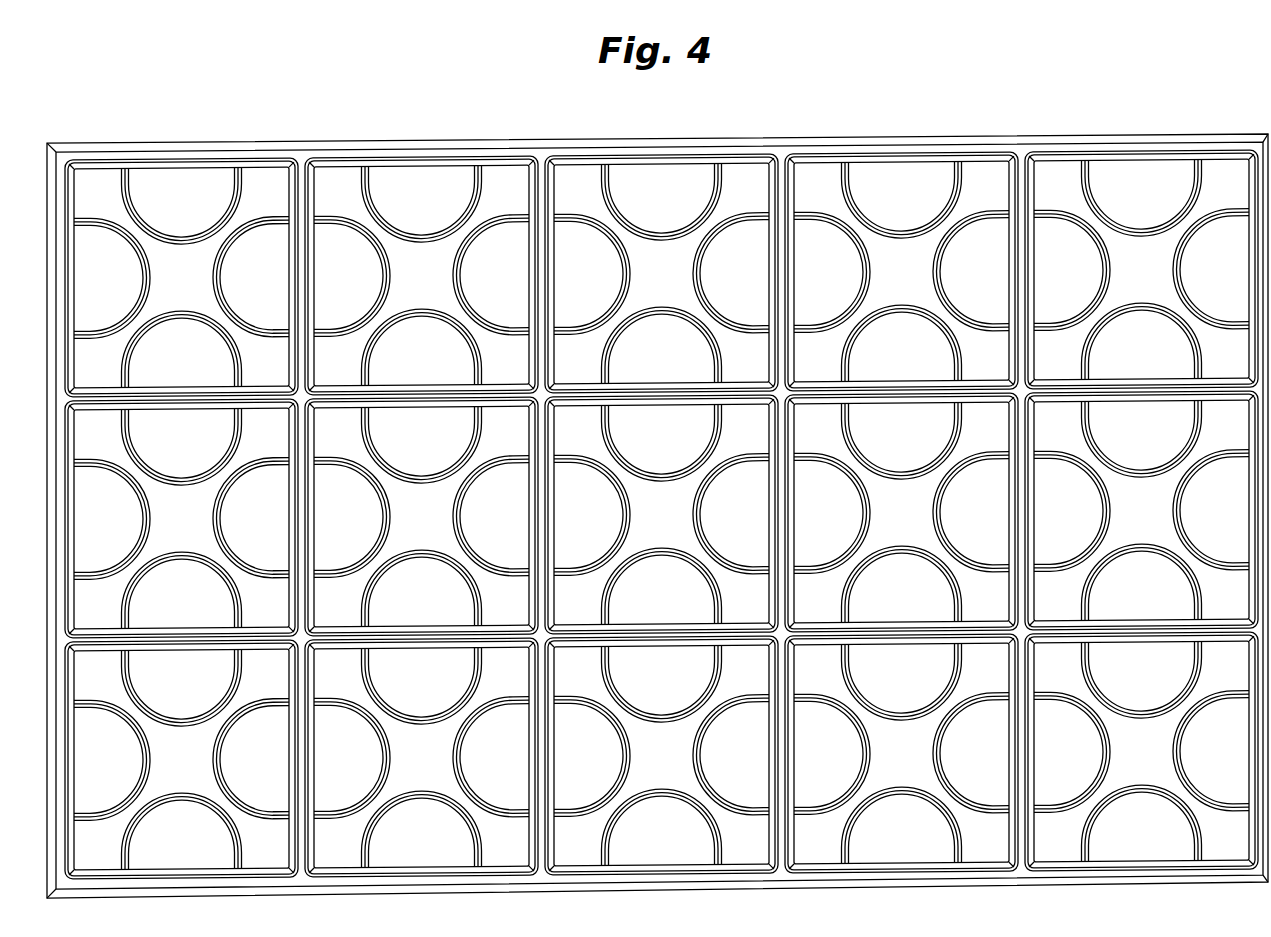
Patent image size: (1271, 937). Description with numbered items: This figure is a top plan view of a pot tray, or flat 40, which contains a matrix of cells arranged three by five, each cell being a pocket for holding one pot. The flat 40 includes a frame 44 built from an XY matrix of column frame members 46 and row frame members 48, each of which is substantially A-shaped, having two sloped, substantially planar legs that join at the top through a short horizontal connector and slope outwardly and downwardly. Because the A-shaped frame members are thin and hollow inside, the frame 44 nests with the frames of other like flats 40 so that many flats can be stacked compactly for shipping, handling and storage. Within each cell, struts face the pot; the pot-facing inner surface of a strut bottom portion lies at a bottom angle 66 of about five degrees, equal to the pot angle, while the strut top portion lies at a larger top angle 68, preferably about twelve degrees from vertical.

The flat 40 is at (919, 112).
The frame 44 is at (348, 128).
The column frame members 46 is at (890, 403).
The row frame members 48 is at (770, 500).
The bottom angle 66 is at (660, 718).
The top angle 68 is at (608, 705).